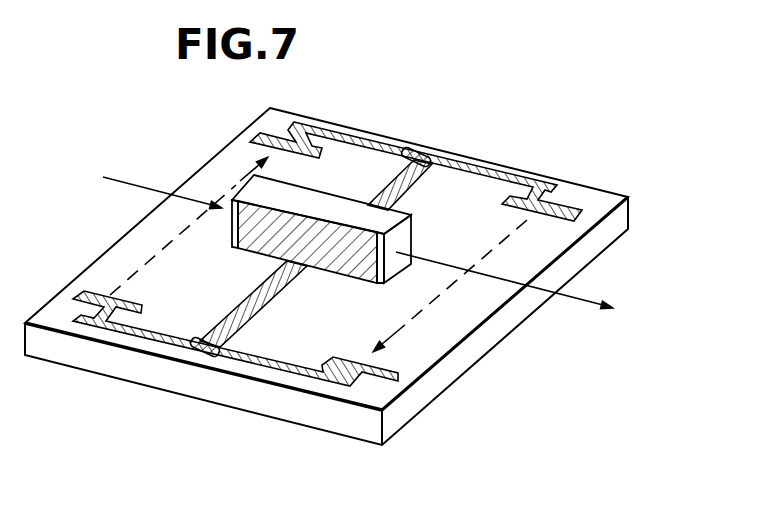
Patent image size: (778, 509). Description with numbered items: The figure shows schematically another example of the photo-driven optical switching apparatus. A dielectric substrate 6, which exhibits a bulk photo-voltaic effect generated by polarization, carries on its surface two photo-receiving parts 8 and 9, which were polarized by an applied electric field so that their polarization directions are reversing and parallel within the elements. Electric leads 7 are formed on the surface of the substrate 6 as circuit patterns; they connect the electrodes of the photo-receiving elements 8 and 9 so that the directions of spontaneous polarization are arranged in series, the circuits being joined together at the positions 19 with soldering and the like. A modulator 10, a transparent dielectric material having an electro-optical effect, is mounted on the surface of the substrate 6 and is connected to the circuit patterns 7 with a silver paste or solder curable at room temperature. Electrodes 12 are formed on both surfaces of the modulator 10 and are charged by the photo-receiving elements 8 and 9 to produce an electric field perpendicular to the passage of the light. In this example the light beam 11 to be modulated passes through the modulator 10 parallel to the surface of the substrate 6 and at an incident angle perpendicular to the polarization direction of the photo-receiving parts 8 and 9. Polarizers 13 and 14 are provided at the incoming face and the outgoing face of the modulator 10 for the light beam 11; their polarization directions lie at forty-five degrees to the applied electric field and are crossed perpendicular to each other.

The dielectric substrate 6 is at (592, 196).
The electric leads 7 is at (298, 377).
The photo-receiving element 8 is at (189, 226).
The photo-receiving element 9 is at (450, 287).
The modulator 10 is at (295, 239).
The light beam 11 is at (364, 246).
The electrodes 12 is at (278, 240).
The polarizer 13 is at (232, 228).
The polarizer 14 is at (383, 285).
The connection positions 19 is at (418, 153).